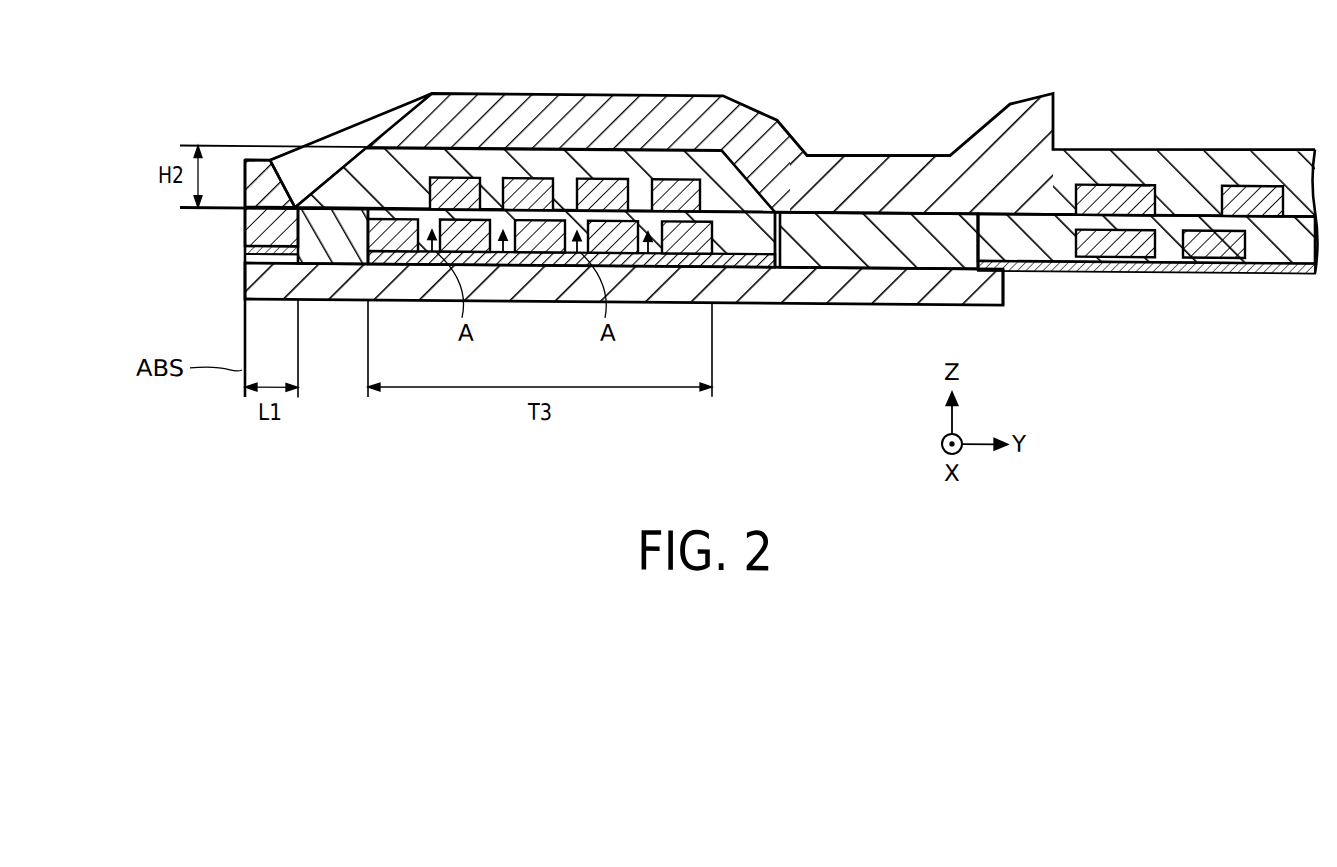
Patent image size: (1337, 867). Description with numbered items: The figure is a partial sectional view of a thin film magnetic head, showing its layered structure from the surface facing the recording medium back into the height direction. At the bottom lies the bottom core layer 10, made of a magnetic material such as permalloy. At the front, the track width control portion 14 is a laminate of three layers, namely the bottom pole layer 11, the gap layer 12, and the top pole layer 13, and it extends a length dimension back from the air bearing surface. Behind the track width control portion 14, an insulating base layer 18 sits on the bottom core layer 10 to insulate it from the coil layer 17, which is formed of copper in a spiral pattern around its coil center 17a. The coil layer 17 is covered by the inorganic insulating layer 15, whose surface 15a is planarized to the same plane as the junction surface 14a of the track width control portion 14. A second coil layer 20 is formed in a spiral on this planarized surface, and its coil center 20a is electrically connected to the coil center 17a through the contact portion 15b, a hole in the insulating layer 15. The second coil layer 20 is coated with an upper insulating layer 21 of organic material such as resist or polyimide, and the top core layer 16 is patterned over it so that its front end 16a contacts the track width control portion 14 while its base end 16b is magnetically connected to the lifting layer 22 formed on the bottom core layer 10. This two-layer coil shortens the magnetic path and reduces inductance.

The bottom core layer 10 is at (893, 283).
The bottom pole layer 11 is at (240, 258).
The gap layer 12 is at (240, 250).
The top pole layer 13 is at (240, 215).
The track width control portion 14 is at (92, 207).
The junction surface 14a is at (292, 196).
The inorganic insulating layer 15 is at (337, 231).
The planarized surface 15a is at (813, 152).
The contact portion 15b is at (1128, 176).
The top core layer 16 is at (660, 124).
The front end 16a is at (262, 176).
The base end 16b is at (872, 178).
The coil layer 17 is at (540, 261).
The coil center 17a is at (1098, 220).
The insulating base layer 18 is at (743, 256).
The second coil layer 20 is at (560, 156).
The coil center 20a is at (1134, 196).
The upper insulating layer 21 is at (732, 161).
The lifting layer 22 is at (833, 238).